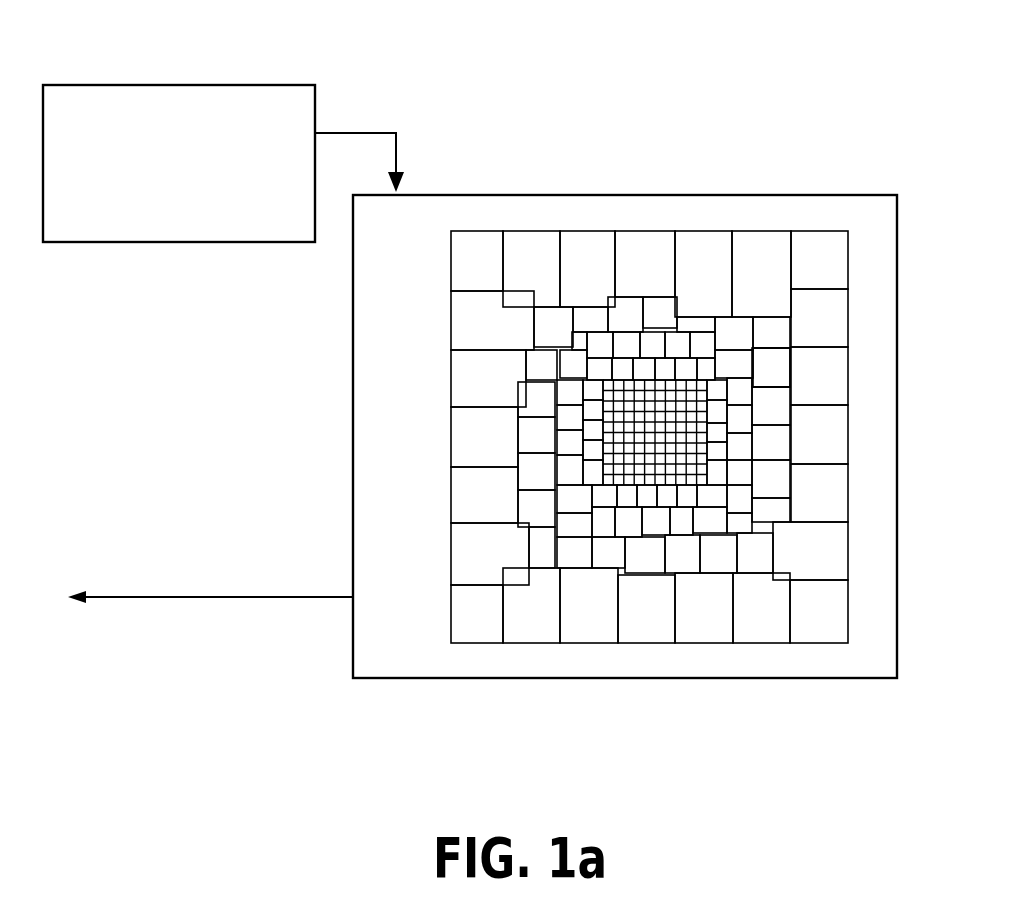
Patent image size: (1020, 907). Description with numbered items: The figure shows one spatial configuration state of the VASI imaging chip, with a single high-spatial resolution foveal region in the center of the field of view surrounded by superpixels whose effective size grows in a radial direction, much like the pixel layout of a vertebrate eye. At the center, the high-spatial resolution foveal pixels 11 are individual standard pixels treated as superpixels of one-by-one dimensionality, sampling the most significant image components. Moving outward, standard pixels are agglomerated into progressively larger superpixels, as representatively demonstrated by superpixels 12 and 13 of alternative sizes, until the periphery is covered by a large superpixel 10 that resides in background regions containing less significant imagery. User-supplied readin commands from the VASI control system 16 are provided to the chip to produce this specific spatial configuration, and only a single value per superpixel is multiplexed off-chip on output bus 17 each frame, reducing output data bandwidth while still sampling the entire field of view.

The large superpixel 10 is at (520, 620).
The high-spatial resolution foveal pixels 11 is at (633, 457).
The superpixel 12 is at (717, 557).
The superpixel 13 is at (740, 507).
The VASI control system 16 is at (315, 105).
The output bus 17 is at (242, 597).